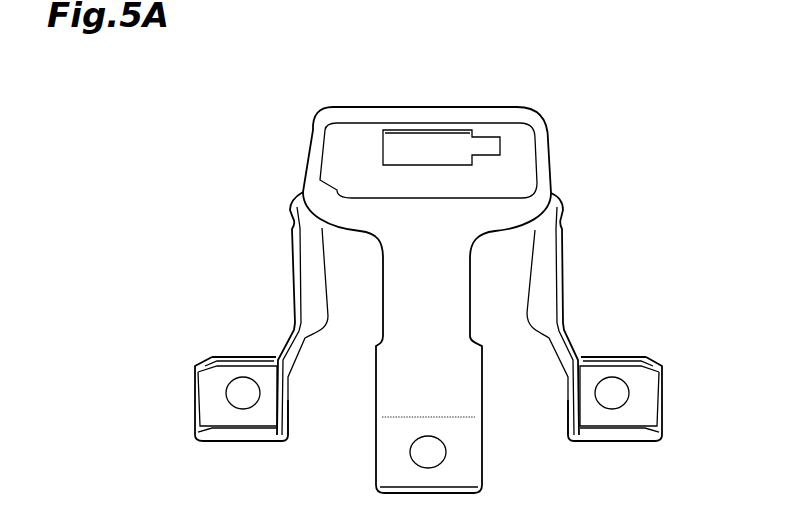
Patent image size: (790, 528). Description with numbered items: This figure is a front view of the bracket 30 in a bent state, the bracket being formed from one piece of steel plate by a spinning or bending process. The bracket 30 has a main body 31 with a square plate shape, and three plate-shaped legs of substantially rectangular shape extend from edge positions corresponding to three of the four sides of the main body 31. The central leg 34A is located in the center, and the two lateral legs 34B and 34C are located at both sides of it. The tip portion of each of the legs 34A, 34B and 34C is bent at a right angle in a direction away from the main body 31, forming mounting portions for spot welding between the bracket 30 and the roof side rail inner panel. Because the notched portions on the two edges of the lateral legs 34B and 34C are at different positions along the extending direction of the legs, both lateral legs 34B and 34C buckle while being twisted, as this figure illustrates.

The bracket 30 is at (288, 88).
The main body 31 is at (492, 115).
The central leg 34A is at (390, 367).
The lateral leg 34B is at (290, 277).
The lateral leg 34C is at (565, 258).